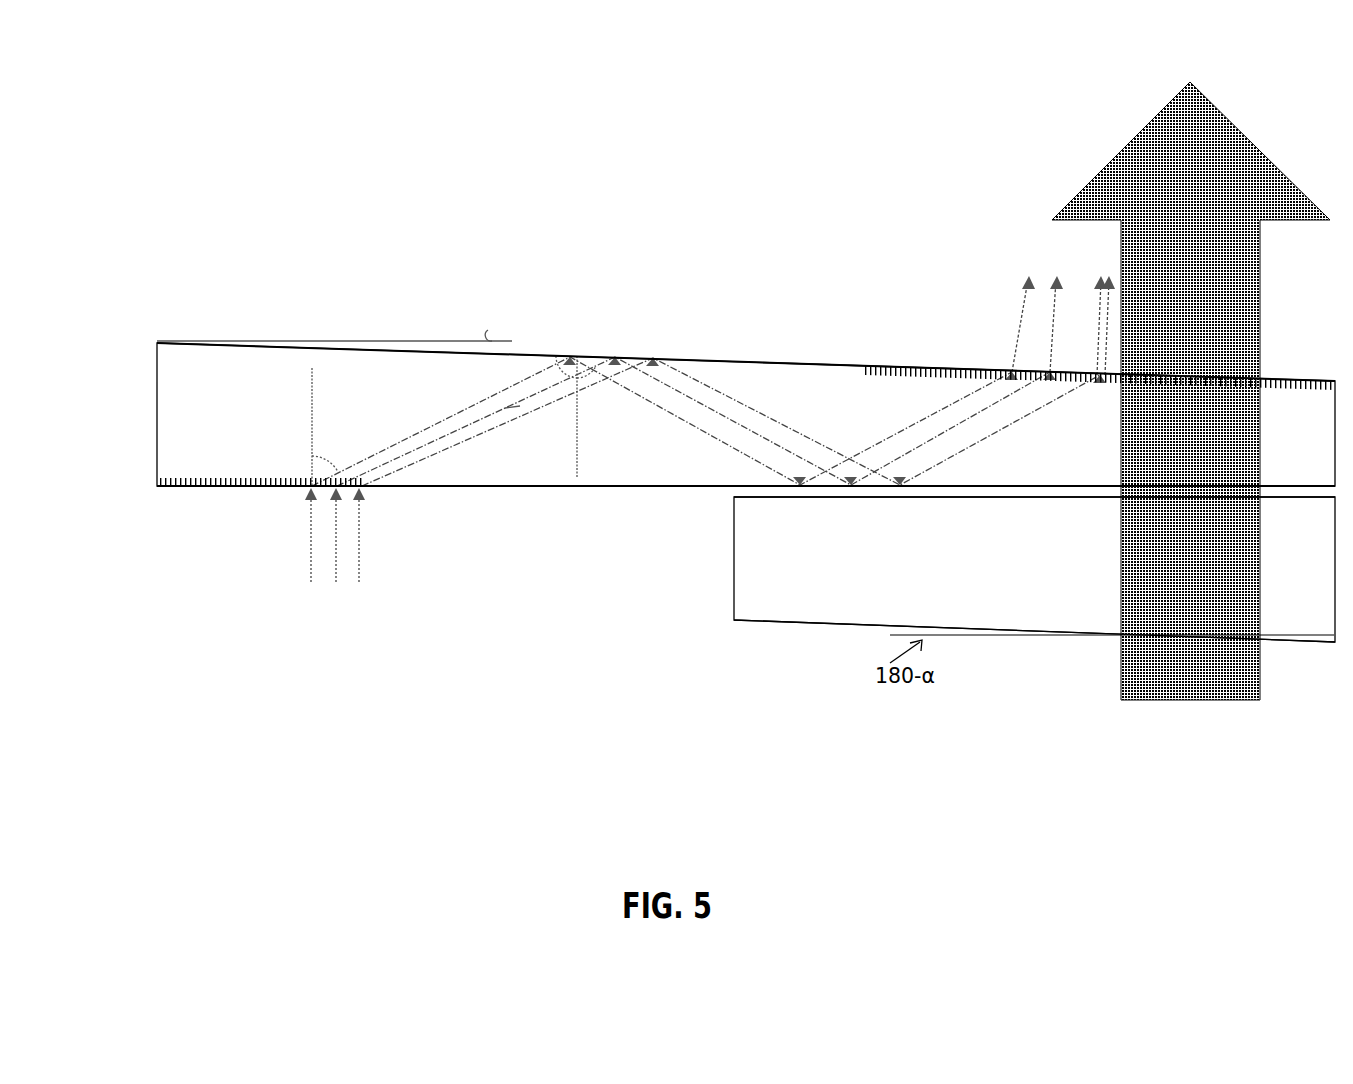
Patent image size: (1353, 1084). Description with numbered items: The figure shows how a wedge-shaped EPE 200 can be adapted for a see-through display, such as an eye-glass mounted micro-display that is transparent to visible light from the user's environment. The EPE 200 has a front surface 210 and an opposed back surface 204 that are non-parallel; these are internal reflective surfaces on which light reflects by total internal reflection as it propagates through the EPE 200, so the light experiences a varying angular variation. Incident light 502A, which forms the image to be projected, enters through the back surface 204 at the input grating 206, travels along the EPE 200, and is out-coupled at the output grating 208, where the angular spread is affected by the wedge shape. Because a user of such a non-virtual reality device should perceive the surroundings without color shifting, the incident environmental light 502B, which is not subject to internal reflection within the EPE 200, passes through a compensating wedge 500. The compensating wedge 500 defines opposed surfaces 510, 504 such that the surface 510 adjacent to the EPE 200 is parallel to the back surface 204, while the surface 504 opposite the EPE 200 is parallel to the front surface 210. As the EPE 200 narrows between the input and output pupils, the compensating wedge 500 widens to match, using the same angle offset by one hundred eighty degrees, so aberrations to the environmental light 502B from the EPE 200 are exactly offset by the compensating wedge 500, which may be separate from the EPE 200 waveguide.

The wedge-shaped EPE 200 is at (286, 318).
The back surface 204 is at (468, 495).
The input grating 206 is at (190, 500).
The output grating 208 is at (885, 355).
The front surface 210 is at (762, 352).
The compensating wedge 500 is at (1034, 569).
The incident light 502A is at (335, 553).
The incident environmental light 502B is at (1191, 430).
The surface opposite the EPE 504 is at (808, 619).
The surface adjacent to the EPE 510 is at (788, 506).